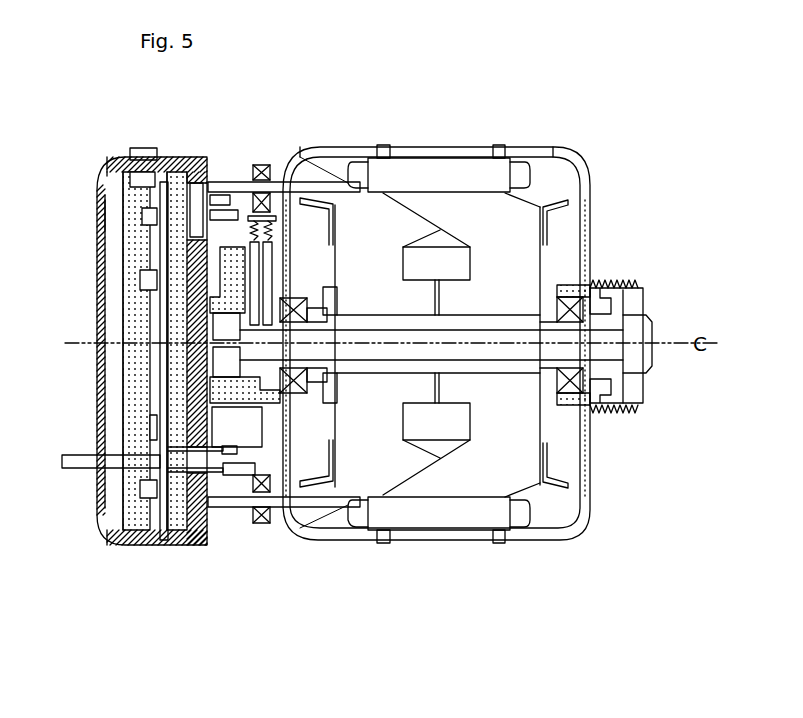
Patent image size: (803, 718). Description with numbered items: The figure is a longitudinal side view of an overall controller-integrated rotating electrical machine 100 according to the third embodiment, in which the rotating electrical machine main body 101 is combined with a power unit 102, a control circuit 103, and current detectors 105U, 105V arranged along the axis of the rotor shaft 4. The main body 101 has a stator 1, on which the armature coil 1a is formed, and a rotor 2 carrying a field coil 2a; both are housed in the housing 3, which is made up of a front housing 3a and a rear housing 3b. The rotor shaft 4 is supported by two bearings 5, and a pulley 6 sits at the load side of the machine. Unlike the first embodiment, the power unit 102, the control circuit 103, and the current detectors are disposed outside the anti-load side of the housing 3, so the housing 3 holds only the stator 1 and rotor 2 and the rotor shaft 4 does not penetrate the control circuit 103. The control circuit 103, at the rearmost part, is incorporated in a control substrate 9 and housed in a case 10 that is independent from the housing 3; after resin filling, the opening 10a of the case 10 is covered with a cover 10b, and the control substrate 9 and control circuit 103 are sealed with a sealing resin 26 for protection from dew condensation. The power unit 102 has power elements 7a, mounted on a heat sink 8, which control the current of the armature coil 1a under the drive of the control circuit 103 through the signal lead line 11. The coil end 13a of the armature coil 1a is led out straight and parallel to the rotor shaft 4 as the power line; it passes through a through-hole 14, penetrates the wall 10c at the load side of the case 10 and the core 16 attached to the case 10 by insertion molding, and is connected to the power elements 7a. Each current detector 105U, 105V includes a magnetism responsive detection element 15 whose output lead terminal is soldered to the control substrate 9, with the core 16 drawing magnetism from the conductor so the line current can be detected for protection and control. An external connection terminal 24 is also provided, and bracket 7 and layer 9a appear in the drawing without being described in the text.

The stator 1 is at (447, 156).
The armature coil 1a is at (520, 156).
The rotor 2 is at (500, 545).
The field coil 2a is at (455, 420).
The housing 3 is at (290, 165).
The front housing 3a is at (588, 198).
The rear housing 3b is at (312, 166).
The rotor shaft 4 is at (313, 340).
The bearing 5 is at (600, 288).
The pulley 6 is at (640, 288).
The bracket 7 is at (316, 205).
The power element 7a is at (192, 554).
The heat sink 8 is at (207, 545).
The control substrate 9 is at (150, 384).
The plate layer 9a is at (150, 410).
The case 10 is at (163, 160).
The opening 10a is at (102, 214).
The cover 10b is at (112, 246).
The wall (holding member) 10c is at (175, 353).
The signal lead line 11 is at (100, 512).
The coil end 13a is at (362, 158).
The through-hole 14 is at (293, 540).
The detection element 15 is at (248, 540).
The core 16 is at (268, 540).
The external connection terminal 24 is at (75, 470).
The sealing resin 26 is at (128, 276).
The controller-integrated rotating electrical machine 100 is at (413, 141).
The rotating electrical machine main body 101 is at (606, 141).
The power unit 102 is at (173, 620).
The control circuit 103 is at (130, 324).
The current detector 105U is at (262, 525).
The current detector 105V is at (258, 165).